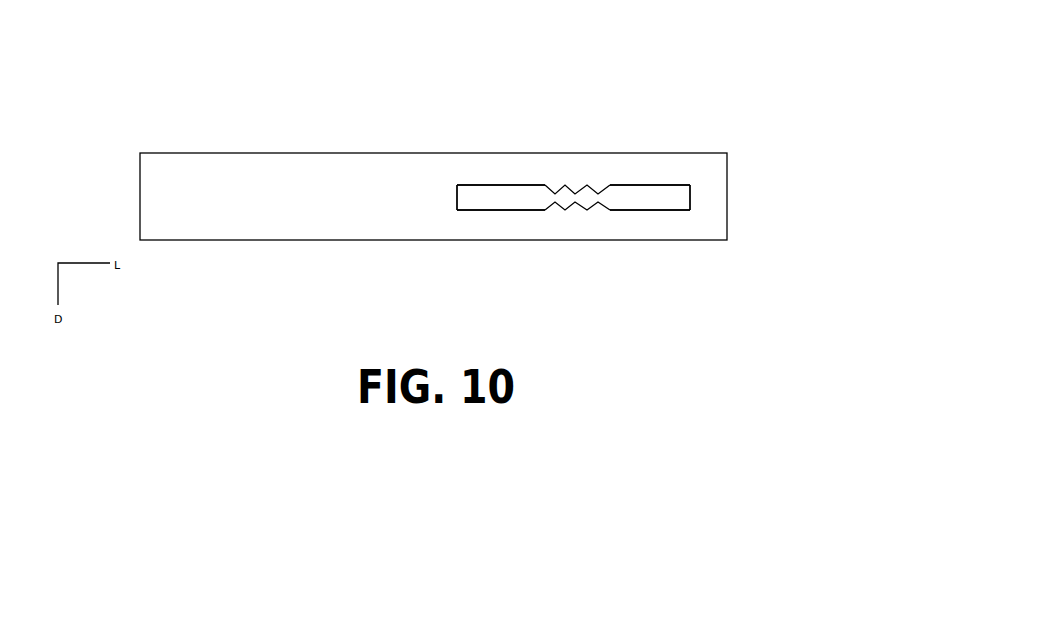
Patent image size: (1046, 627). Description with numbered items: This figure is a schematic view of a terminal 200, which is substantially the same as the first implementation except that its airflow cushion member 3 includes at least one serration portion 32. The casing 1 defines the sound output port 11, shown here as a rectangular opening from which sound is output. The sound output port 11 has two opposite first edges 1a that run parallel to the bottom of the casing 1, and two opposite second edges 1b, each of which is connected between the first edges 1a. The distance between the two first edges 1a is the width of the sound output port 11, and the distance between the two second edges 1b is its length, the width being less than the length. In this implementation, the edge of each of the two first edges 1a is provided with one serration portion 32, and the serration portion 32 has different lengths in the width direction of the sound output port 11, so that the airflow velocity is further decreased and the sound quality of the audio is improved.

The terminal 200 is at (722, 80).
The casing 1 is at (310, 225).
The first edges 1a is at (508, 185).
The second edges 1b is at (457, 190).
The sound output port 11 is at (650, 198).
The airflow cushion member 3 is at (651, 205).
The serration portion 32 is at (578, 188).